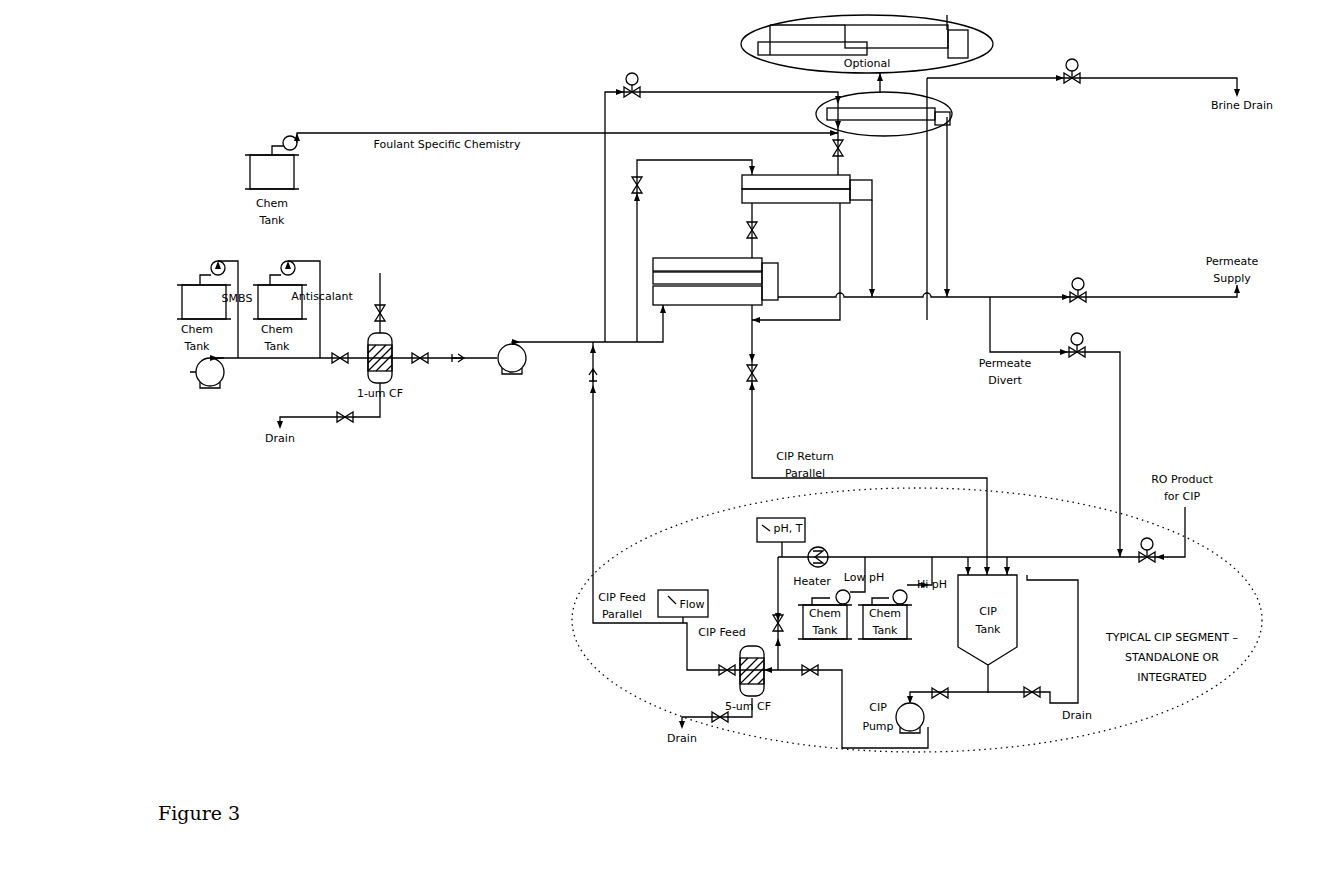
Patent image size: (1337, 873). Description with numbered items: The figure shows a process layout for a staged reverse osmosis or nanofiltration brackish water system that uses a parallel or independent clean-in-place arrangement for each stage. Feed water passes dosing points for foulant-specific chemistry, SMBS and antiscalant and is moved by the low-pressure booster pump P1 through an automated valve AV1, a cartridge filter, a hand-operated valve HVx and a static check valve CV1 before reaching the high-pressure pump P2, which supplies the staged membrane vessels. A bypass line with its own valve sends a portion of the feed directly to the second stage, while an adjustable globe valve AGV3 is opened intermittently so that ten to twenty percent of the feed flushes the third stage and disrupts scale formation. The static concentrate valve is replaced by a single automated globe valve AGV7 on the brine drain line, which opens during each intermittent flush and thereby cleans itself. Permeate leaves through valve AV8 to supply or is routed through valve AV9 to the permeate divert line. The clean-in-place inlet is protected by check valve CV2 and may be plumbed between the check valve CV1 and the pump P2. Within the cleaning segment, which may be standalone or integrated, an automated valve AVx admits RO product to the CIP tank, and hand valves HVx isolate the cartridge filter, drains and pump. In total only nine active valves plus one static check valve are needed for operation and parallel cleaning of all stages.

The low pressure booster pump P1 is at (209, 389).
The high-pressure pump P2 is at (511, 376).
The automated valve AV1 is at (339, 369).
The hand-operated valve HVx is at (689, 522).
The static check-valve CV1 is at (458, 369).
The check valve CV2 is at (608, 369).
The adjustable globe valve AGV3 is at (634, 94).
The automated globe valve AGV7 is at (1071, 79).
The automated valve AV8 is at (1075, 298).
The automated valve AV9 is at (1074, 353).
The automated valve AVx is at (1150, 559).